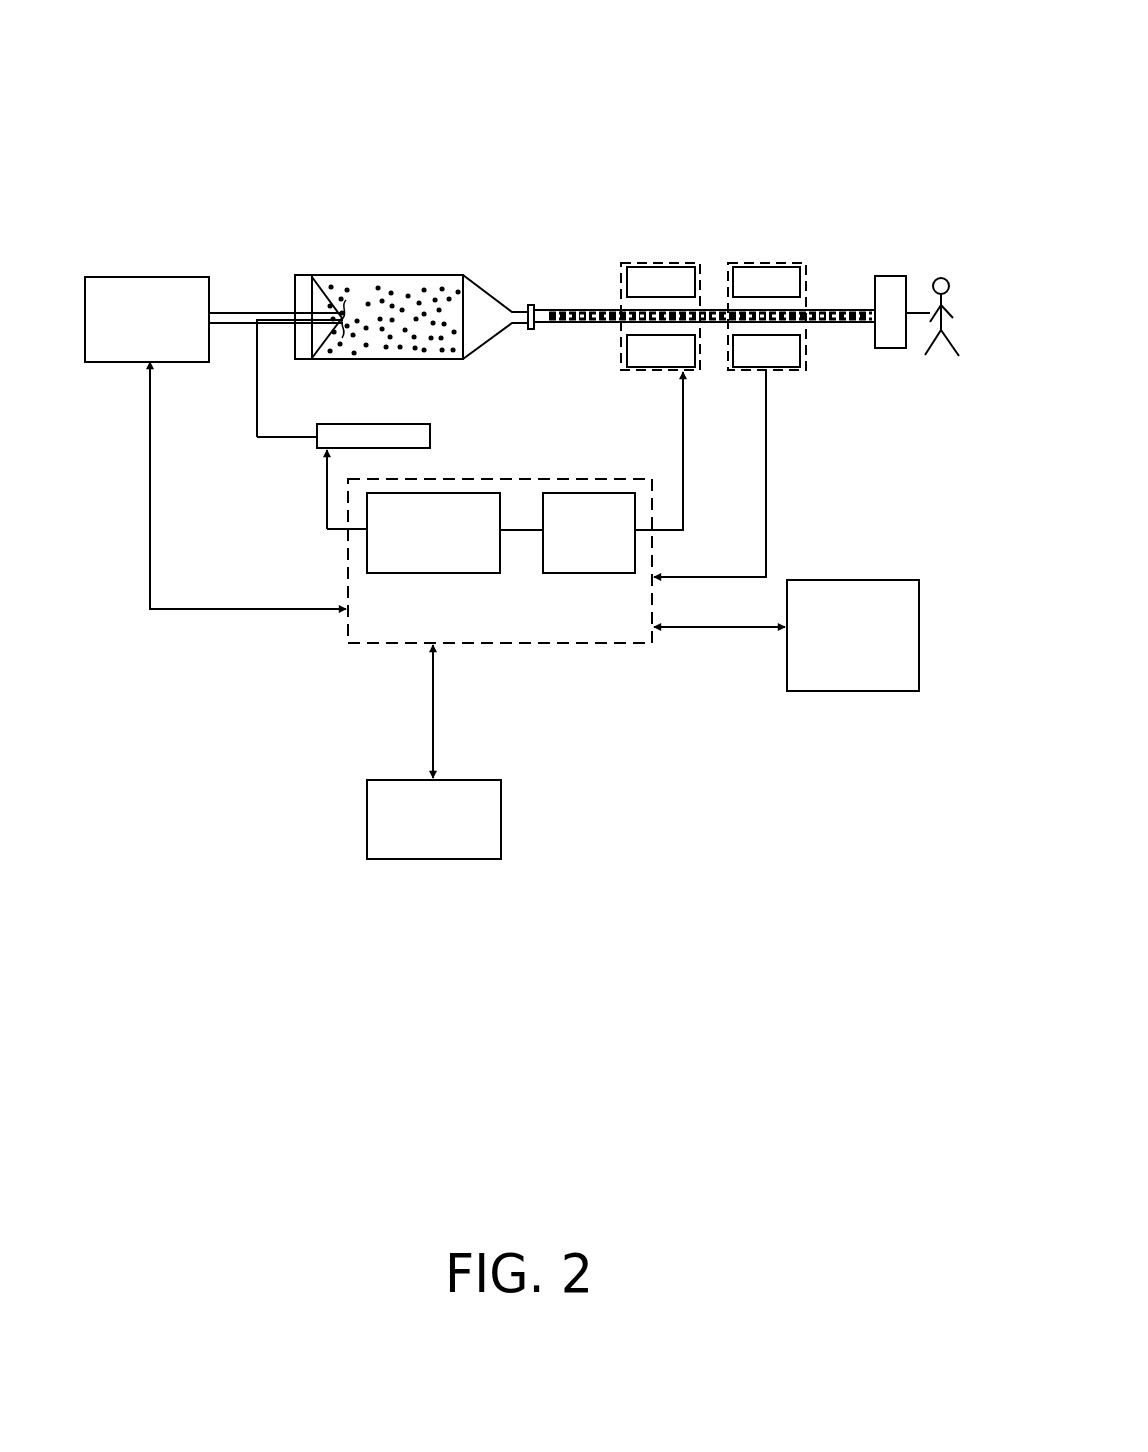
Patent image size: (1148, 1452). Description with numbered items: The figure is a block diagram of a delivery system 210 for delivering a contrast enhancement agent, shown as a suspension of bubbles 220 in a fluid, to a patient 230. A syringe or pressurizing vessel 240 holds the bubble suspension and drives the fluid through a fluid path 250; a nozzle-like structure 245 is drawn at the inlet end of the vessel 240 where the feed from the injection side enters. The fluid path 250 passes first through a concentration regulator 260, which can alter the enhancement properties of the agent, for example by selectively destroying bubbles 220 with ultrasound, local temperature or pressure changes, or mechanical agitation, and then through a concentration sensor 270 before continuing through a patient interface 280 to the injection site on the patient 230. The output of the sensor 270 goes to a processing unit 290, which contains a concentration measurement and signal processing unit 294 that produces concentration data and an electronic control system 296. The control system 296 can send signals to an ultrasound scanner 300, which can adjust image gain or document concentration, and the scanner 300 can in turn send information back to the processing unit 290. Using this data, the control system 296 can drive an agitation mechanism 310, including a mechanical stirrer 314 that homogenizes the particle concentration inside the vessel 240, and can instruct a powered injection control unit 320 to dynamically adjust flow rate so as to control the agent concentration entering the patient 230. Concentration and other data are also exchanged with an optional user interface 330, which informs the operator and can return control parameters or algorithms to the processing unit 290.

The delivery system 210 is at (720, 130).
The bubbles 220 is at (433, 282).
The patient 230 is at (932, 353).
The syringe or pressurizing vessel 240 is at (365, 277).
The nozzle 245 is at (318, 277).
The fluid path 250 is at (618, 305).
The concentration regulator 260 is at (652, 265).
The concentration sensor 270 is at (772, 260).
The patient interface 280 is at (893, 276).
The processing unit 290 is at (467, 570).
The concentration measurement and signal processing unit 294 is at (567, 533).
The electronic control system 296 is at (433, 533).
The ultrasound scanner 300 is at (837, 691).
The agitation mechanism 310 is at (430, 428).
The mechanical stirrer 314 is at (340, 337).
The powered injection control unit 320 is at (145, 277).
The user interface 330 is at (501, 817).